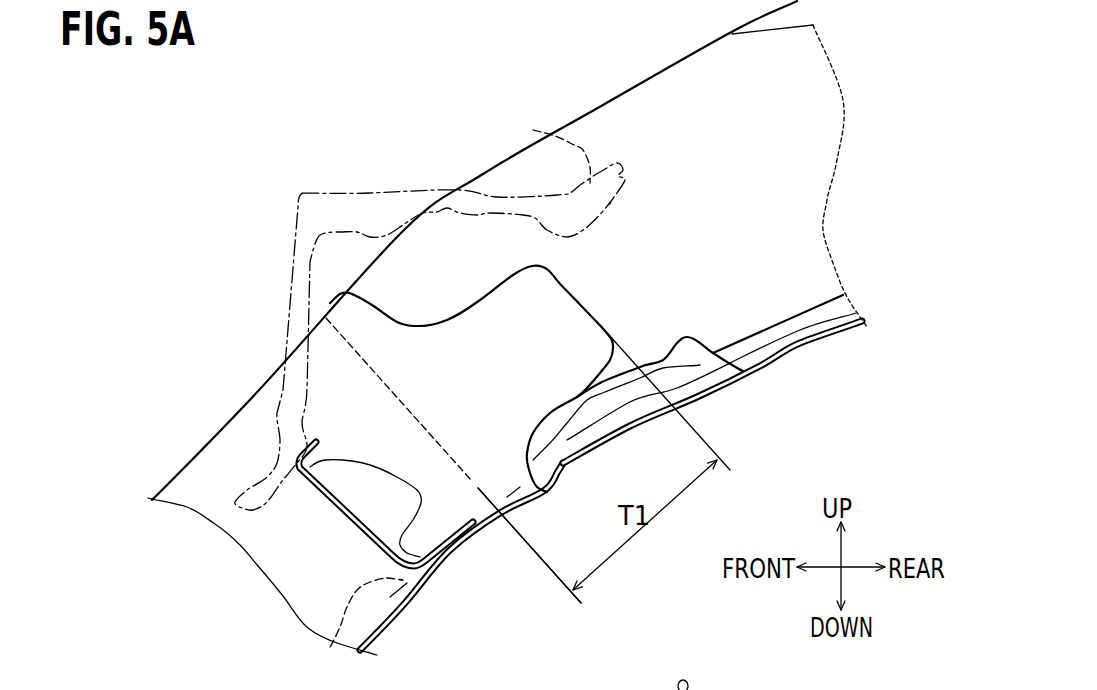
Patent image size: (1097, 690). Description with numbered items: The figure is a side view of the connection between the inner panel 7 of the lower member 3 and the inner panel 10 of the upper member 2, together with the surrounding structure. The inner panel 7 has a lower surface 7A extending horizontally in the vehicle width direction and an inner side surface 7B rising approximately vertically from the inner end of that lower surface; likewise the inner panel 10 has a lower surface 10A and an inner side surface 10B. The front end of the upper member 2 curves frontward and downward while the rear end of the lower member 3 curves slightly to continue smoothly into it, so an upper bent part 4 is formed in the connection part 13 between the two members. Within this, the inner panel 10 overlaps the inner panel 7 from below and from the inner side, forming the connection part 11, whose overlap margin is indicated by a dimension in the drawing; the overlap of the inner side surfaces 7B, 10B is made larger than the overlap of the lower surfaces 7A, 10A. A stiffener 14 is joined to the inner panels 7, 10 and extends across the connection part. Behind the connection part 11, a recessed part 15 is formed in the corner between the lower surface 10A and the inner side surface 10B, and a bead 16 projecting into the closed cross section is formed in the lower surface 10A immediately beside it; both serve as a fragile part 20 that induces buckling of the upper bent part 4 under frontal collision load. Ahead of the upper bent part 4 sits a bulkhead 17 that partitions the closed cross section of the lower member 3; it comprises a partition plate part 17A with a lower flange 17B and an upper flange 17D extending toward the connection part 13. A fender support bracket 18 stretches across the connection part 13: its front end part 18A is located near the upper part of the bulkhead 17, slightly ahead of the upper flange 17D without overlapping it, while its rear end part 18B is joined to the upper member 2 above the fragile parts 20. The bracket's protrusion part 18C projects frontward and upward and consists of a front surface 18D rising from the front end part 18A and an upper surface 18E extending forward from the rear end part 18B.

The upper member 2 is at (633, 70).
The lower member 3 is at (178, 458).
The upper bent part 4 is at (297, 177).
The inner panel 7 is at (262, 398).
The lower surface 7A is at (396, 611).
The inner side surface 7B is at (257, 533).
The inner panel 10 is at (677, 60).
The lower surface 10A is at (808, 336).
The inner side surface 10B is at (623, 133).
The connection part 11 is at (475, 440).
The connection part 13 is at (529, 545).
The stiffener 14 is at (330, 647).
The recessed part 15 is at (728, 357).
The bead 16 is at (620, 431).
The bulkhead 17 is at (316, 502).
The partition plate part 17A is at (353, 527).
The lower flange 17B is at (457, 552).
The upper flange 17D is at (307, 443).
The fender support bracket 18 is at (342, 188).
The front end part 18A is at (263, 467).
The rear end part 18B is at (533, 130).
The protrusion part 18C is at (300, 213).
The front surface 18D is at (293, 285).
The upper surface 18E is at (410, 197).
The fragile part 20 is at (703, 412).